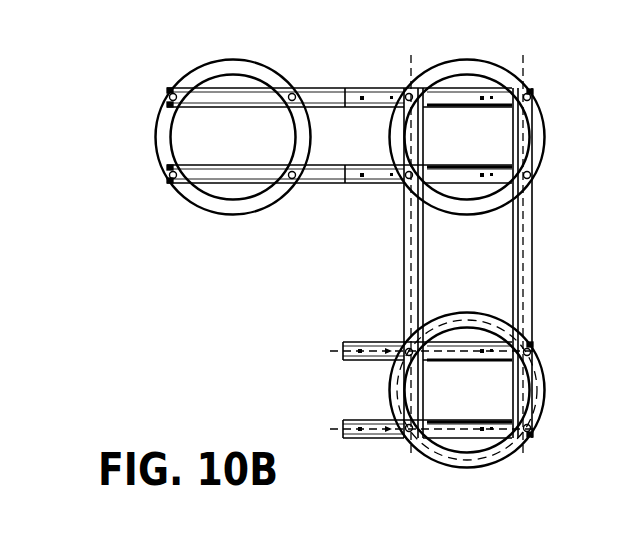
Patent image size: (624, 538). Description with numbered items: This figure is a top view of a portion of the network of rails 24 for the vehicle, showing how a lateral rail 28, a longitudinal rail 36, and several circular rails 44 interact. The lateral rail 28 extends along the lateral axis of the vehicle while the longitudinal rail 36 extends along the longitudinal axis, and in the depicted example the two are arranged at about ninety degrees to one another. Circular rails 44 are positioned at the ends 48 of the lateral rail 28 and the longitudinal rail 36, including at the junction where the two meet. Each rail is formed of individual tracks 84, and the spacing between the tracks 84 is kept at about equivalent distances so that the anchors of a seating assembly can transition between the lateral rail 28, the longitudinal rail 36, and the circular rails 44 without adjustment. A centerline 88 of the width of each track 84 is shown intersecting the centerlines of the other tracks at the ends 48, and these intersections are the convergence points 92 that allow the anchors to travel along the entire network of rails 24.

The network of rails 24 is at (336, 251).
The lateral rails 28 is at (523, 270).
The longitudinal rails 36 is at (220, 165).
The circular rails 44 is at (262, 62).
The ends 48 is at (157, 108).
The individual tracks 84 is at (320, 88).
The centerline 88 is at (527, 230).
The convergence points 92 is at (535, 342).